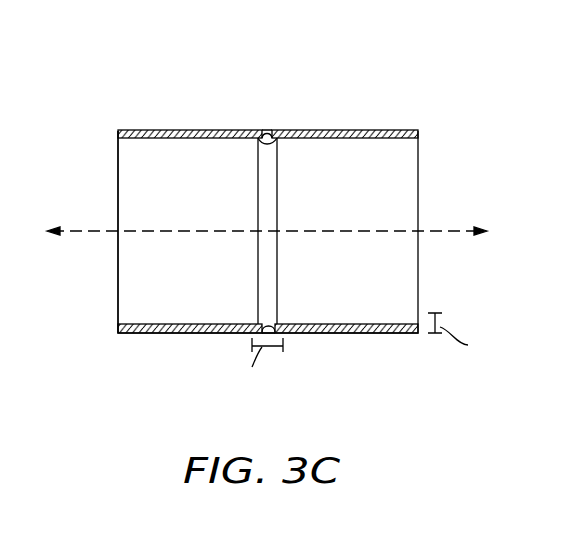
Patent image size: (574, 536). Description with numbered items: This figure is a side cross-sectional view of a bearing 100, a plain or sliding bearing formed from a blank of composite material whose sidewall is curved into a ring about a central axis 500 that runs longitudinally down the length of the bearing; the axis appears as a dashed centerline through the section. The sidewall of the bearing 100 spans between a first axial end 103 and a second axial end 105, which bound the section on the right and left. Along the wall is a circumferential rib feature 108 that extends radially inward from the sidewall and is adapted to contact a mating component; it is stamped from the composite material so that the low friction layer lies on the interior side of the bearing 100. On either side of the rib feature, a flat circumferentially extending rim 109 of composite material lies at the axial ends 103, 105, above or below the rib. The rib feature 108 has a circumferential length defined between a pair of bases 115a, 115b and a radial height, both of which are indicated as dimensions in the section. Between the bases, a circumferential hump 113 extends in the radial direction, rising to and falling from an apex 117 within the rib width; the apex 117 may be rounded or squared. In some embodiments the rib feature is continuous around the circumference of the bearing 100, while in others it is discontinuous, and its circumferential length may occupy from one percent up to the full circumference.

The bearing 100 is at (285, 208).
The first axial end 103 is at (418, 132).
The second axial end 105 is at (118, 131).
The circumferential rib feature 108 is at (267, 131).
The rim 109 is at (355, 130).
The circumferential hump 113 is at (265, 140).
The first base 115a is at (258, 323).
The second base 115b is at (278, 323).
The apex 117 is at (273, 320).
The central axis 500 is at (96, 233).